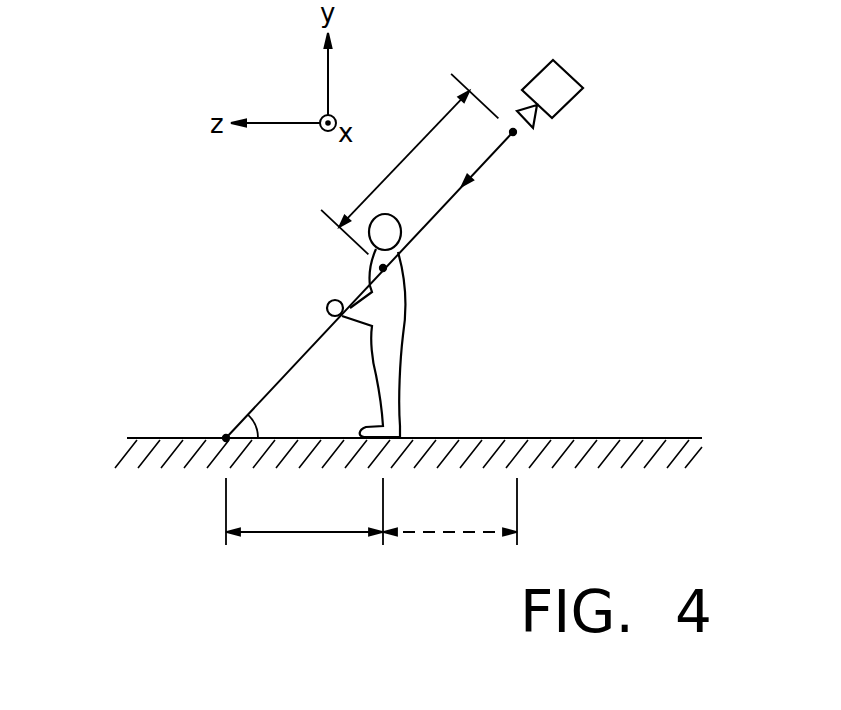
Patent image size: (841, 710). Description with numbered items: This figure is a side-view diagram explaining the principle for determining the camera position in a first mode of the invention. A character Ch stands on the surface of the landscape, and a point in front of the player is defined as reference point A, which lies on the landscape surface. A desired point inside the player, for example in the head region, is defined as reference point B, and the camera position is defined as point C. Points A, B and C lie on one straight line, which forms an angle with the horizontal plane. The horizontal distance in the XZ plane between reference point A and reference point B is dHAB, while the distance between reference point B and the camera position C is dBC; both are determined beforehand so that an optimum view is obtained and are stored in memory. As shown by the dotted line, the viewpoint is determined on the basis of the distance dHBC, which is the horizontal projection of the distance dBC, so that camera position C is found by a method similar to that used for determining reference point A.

The character Ch is at (406, 330).
The point in front of the player A is at (226, 434).
The desired point inside the player B is at (386, 268).
The camera position C is at (515, 135).
The distance between reference point B and reference point C dBC is at (409, 164).
The horizontal distance between reference point A and reference point B dHAB is at (304, 511).
The horizontal projection of the distance dBC dHBC is at (450, 511).